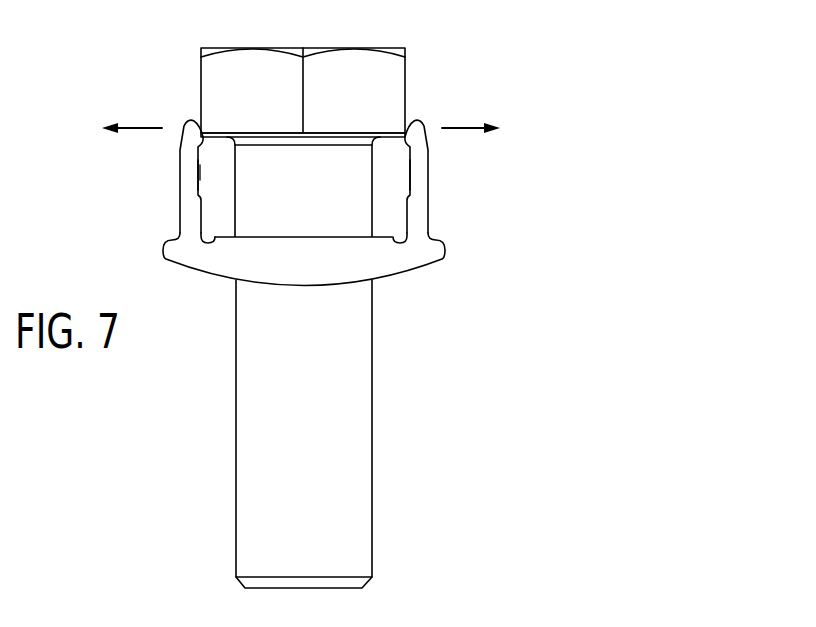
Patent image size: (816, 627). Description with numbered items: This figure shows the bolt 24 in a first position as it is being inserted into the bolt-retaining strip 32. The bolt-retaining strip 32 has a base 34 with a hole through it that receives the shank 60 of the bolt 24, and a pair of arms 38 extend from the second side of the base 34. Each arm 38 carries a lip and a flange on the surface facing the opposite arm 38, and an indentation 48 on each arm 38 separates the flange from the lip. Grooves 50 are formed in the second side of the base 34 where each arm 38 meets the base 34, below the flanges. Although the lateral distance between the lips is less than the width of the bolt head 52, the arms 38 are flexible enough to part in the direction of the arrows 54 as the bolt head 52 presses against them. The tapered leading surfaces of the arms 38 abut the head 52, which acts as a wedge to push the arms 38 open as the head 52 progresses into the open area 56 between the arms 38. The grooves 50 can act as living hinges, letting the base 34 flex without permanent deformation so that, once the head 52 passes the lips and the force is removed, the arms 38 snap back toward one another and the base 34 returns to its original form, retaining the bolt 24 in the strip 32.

The bolt 24 is at (394, 408).
The bolt-retaining strip 32 is at (446, 198).
The base 34 is at (260, 258).
The arms 38 is at (180, 192).
The indentation 48 is at (198, 186).
The grooves 50 is at (207, 236).
The bolt head 52 is at (352, 78).
The arrows 54 is at (140, 128).
The open area 56 is at (220, 185).
The shank 60 is at (347, 460).